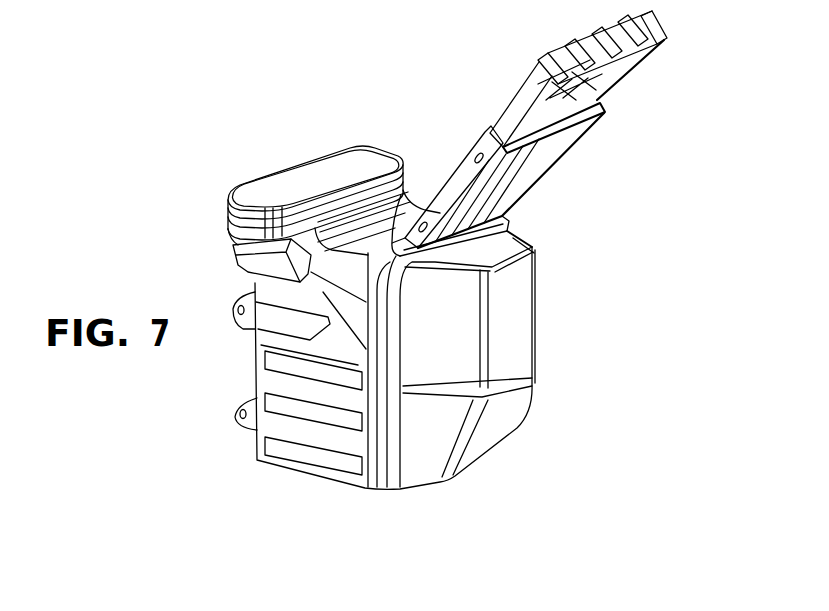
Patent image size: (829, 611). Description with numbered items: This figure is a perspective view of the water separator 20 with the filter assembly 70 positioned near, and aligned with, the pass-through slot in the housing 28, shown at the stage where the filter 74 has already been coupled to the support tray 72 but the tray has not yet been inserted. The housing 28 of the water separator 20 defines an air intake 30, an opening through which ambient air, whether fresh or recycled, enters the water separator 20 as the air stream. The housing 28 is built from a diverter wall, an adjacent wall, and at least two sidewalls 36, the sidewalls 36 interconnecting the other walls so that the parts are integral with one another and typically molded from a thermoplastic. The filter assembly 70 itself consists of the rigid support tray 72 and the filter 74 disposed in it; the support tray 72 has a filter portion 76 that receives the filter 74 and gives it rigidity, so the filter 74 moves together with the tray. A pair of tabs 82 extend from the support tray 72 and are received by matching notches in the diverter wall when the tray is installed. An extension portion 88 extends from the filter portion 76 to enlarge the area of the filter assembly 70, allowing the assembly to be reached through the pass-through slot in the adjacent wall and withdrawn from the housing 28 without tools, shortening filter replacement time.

The water separator 20 is at (400, 303).
The housing 28 is at (548, 245).
The air intake 30 is at (306, 186).
The sidewalls 36 is at (270, 420).
The filter assembly 70 is at (528, 129).
The support tray 72 is at (442, 171).
The filter 74 is at (542, 129).
The filter portion 76 is at (443, 186).
The tabs 82 is at (478, 156).
The extension portion 88 is at (508, 95).